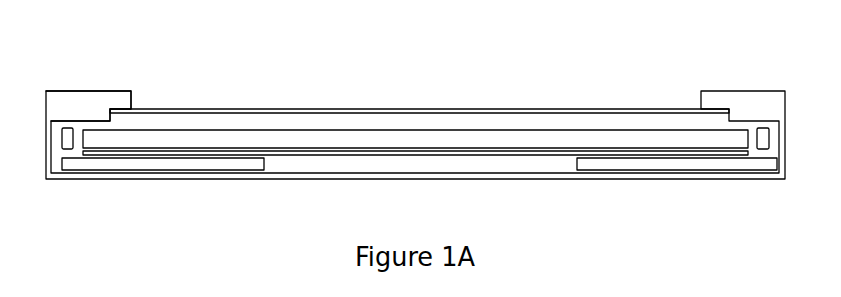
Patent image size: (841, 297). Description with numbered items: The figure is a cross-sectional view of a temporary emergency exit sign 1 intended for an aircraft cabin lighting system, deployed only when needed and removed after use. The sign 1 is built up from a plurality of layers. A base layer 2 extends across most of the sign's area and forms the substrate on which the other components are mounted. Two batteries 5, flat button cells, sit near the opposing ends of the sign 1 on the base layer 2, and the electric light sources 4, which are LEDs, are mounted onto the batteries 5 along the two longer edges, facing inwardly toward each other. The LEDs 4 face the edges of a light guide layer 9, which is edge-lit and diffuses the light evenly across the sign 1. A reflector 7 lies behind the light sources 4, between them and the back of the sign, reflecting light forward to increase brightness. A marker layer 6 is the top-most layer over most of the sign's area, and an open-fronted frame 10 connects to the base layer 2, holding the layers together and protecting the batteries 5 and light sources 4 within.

The temporary emergency exit sign 1 is at (700, 55).
The base layer 2 is at (308, 179).
The electric light sources 4 is at (62, 136).
The batteries 5 is at (157, 170).
The marker layer 6 is at (280, 109).
The reflector 7 is at (430, 157).
The light guide layer 9 is at (502, 135).
The frame 10 is at (111, 91).